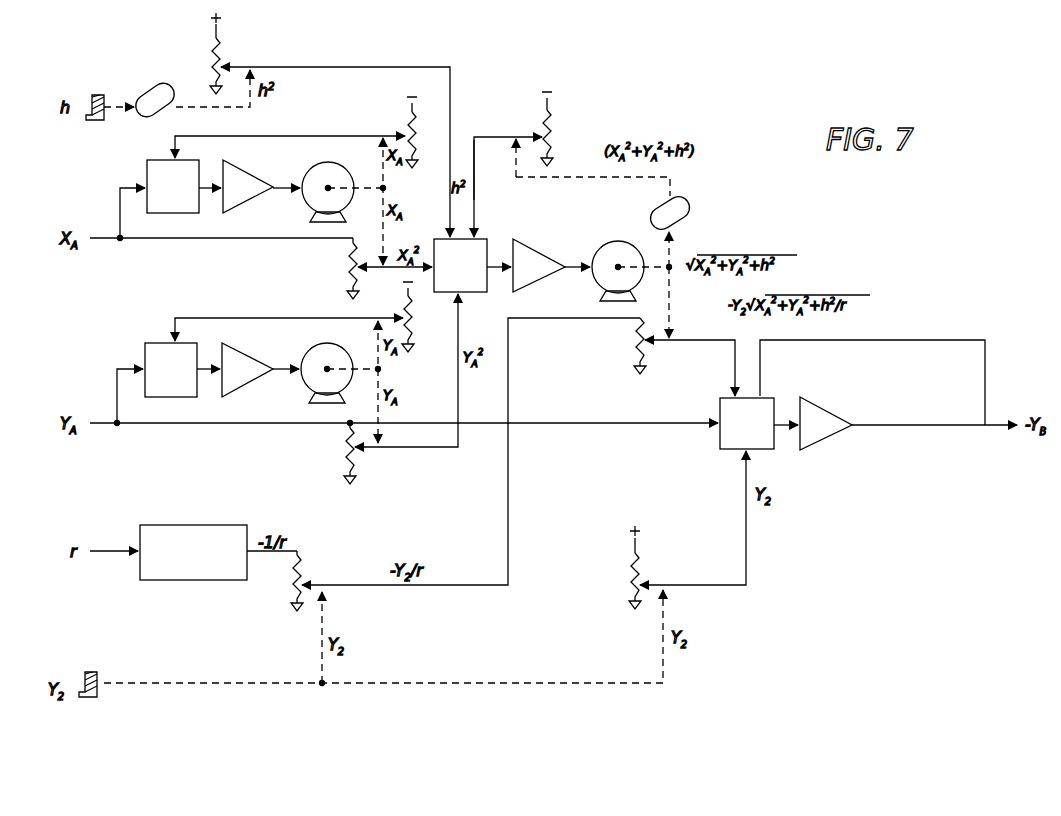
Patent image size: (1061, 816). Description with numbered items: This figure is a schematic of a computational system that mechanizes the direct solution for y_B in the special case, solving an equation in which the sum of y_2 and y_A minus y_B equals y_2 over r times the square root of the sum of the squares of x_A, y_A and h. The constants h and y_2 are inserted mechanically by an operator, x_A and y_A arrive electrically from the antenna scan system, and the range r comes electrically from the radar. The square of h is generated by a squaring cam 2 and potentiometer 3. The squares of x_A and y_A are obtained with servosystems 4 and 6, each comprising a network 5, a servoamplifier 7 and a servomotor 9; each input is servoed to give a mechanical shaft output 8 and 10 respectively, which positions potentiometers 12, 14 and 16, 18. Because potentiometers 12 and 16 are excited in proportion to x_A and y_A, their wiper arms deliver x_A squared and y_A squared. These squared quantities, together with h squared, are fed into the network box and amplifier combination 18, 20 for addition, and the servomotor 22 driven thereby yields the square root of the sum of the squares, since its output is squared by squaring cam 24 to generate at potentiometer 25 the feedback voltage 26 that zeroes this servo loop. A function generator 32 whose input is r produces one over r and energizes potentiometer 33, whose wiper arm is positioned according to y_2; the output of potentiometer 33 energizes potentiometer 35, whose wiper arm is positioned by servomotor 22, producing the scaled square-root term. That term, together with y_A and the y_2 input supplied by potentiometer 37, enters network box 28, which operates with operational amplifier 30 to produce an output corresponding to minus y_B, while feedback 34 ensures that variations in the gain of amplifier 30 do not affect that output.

The squaring cam 2 is at (168, 88).
The potentiometer 3 is at (210, 49).
The servosystem 4 is at (320, 182).
The network 5 is at (196, 209).
The servosystem 6 is at (320, 364).
The servoamplifier 7 is at (252, 203).
The mechanical shaft output 8 is at (358, 190).
The servomotor 9 is at (313, 198).
The mechanical shaft output 10 is at (370, 366).
The potentiometer 12 is at (349, 276).
The potentiometer 14 is at (409, 126).
The potentiometer 16 is at (349, 455).
The network box 18 is at (486, 240).
The amplifier 20 is at (531, 247).
The servomotor 22 is at (612, 248).
The squaring cam 24 is at (690, 220).
The potentiometer 25 is at (549, 142).
The feedback voltage 26 is at (475, 200).
The network box 28 is at (718, 405).
The operational amplifier 30 is at (825, 450).
The function generator 32 is at (241, 526).
The potentiometer 33 is at (290, 581).
The feedback 34 is at (986, 351).
The potentiometer 35 is at (636, 351).
The potentiometer 37 is at (630, 577).